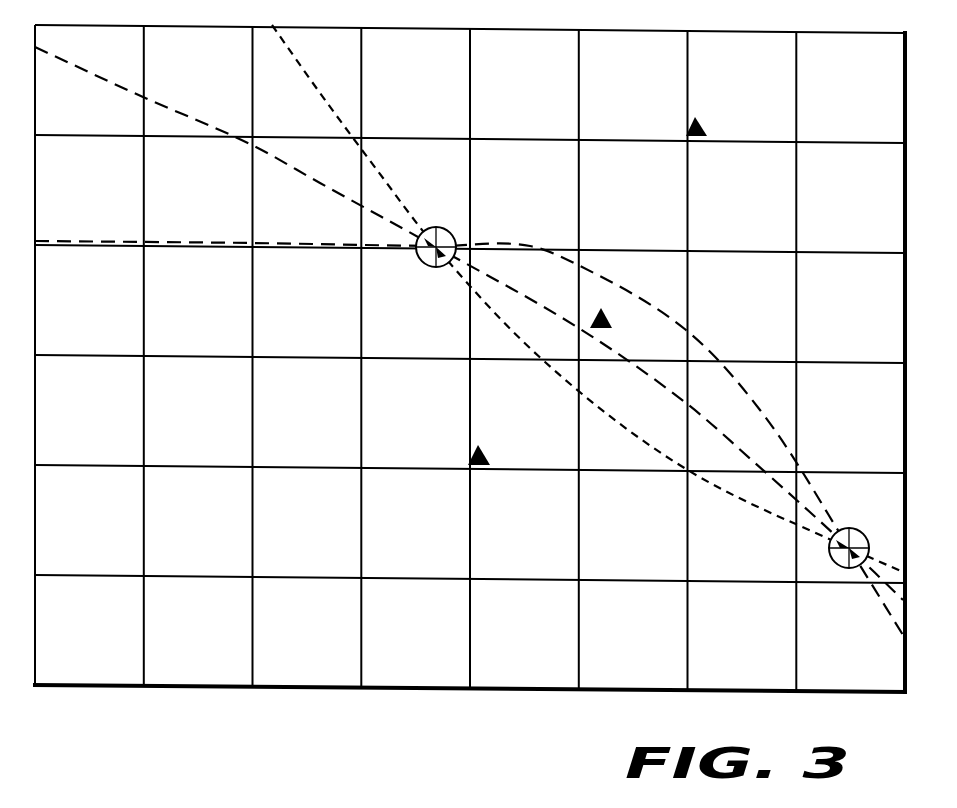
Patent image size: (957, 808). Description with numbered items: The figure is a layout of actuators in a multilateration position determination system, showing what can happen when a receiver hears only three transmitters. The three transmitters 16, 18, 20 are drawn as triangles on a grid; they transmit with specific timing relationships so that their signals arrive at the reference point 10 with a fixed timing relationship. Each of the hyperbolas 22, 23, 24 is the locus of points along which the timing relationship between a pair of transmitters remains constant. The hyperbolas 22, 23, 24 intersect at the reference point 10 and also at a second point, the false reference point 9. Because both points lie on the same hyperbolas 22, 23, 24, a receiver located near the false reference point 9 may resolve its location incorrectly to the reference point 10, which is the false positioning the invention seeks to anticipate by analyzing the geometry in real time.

The false reference point 9 is at (448, 228).
The reference point 10 is at (866, 534).
The transmitter 16 is at (486, 454).
The transmitter 18 is at (610, 318).
The transmitter 20 is at (704, 124).
The hyperbola 22 is at (634, 439).
The hyperbola 23 is at (718, 431).
The hyperbola 24 is at (709, 358).